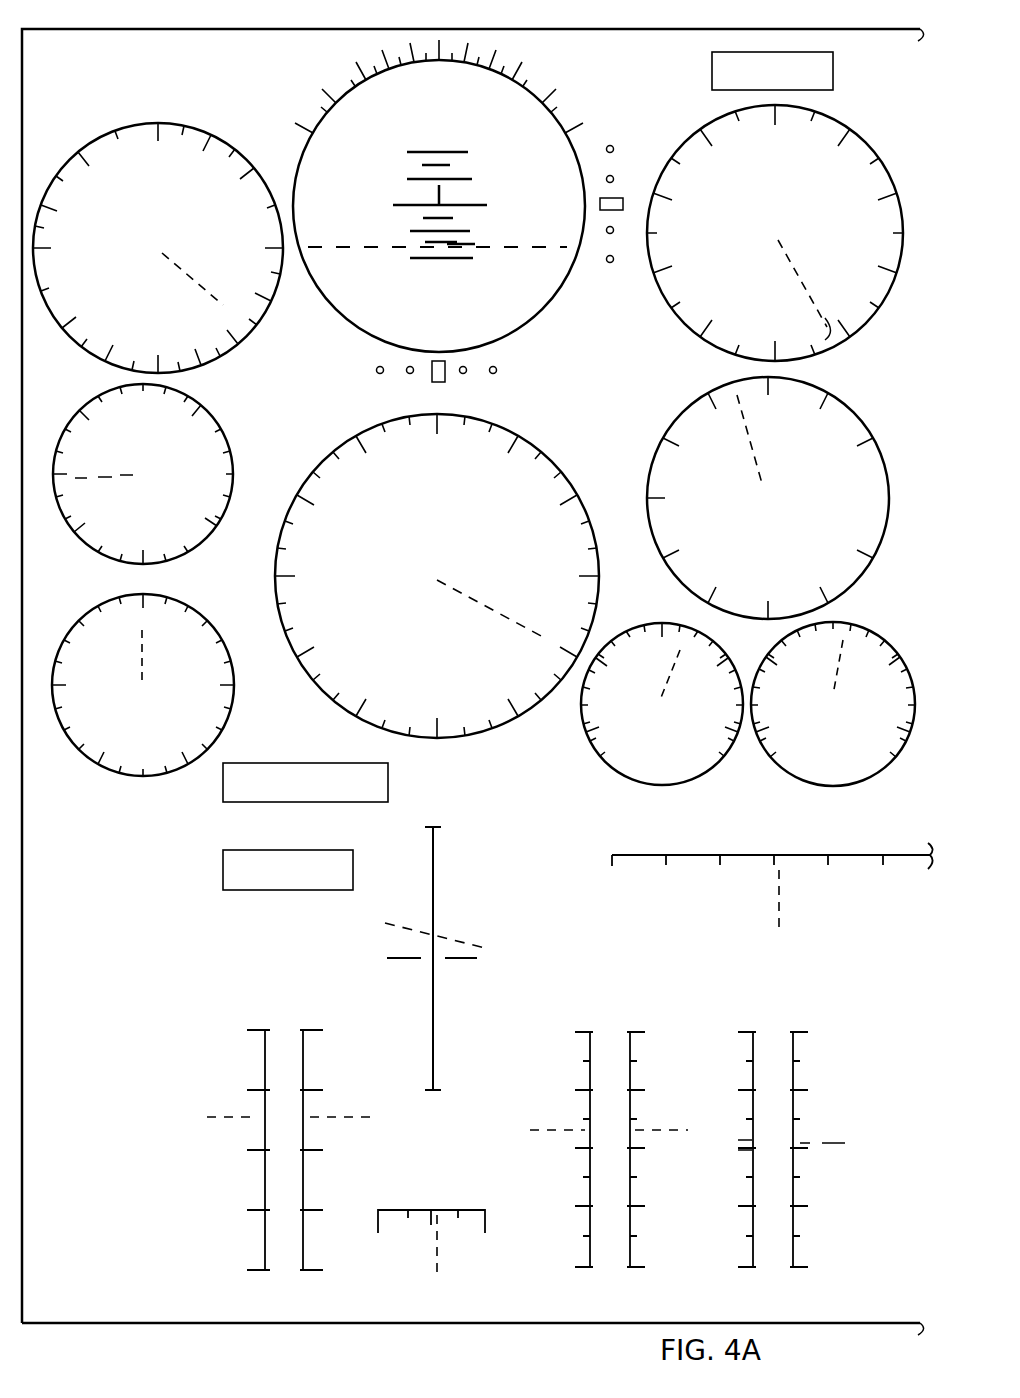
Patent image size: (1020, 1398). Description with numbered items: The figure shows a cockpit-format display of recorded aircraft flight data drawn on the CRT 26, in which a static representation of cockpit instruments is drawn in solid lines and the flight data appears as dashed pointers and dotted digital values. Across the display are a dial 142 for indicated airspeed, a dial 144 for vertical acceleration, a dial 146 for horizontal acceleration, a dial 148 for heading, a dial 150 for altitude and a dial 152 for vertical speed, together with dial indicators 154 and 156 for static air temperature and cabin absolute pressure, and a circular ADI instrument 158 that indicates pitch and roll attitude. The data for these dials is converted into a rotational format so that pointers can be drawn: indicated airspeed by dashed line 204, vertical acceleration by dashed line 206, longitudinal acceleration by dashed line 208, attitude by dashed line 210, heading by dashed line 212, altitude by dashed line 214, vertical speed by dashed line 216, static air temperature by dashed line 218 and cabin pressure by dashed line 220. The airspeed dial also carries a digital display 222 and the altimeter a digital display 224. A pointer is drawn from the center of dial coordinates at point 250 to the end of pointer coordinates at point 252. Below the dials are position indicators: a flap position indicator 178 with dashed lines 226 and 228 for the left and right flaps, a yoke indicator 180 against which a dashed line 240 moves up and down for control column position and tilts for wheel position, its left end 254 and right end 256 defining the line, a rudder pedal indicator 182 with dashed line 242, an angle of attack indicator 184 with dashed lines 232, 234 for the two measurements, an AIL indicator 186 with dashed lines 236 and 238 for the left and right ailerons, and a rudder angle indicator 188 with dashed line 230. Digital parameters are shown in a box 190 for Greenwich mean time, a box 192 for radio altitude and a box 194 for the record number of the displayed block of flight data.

The CRT 26 is at (165, 29).
The dial for indicated airspeed (IAS) 142 is at (158, 230).
The dial for vertical acceleration (VER) 144 is at (168, 471).
The dial for horizontal acceleration (LNG) 146 is at (143, 670).
The dial for heading (HDG) 148 is at (437, 561).
The dial for altitude (ALT) 150 is at (780, 237).
The dial for vertical speed (VSI) 152 is at (765, 490).
The dial indicator for static air temperature (SAT) 154 is at (662, 680).
The dial indicator for cabin absolute pressure (CAB) 156 is at (834, 682).
The circular ADI instrument 158 is at (465, 211).
The flap position indicator 178 is at (278, 1131).
The control column and wheel (yoke) indicator 180 is at (411, 946).
The rudder pedal indicator 182 is at (452, 1215).
The angle of attack indicator 184 is at (599, 1129).
The AIL indicator 186 is at (768, 1128).
The rudder angle indicator 188 is at (765, 864).
The box for Greenwich mean time 190 is at (388, 780).
The box for radio altitude 192 is at (833, 63).
The box for record number 194 is at (355, 860).
The dashed line pointer for indicated airspeed 204 is at (158, 277).
The dashed line for vertical acceleration indicator 206 is at (80, 480).
The dashed line for longitudinal acceleration 208 is at (143, 633).
The dashed line for aircraft attitude 210 is at (343, 247).
The dashed line for aircraft heading 212 is at (490, 608).
The dashed line for altitude 214 is at (803, 287).
The dashed line for vertical speed indicator 216 is at (758, 473).
The dashed line for static air temperature 218 is at (670, 680).
The dashed line for cabin pressure 220 is at (837, 672).
The digital display of airspeed dial 222 is at (163, 207).
The digital display of altimeter 224 is at (743, 185).
The dashed line for left flap position 226 is at (232, 1115).
The dashed line for right flap position 228 is at (336, 1117).
The dashed line for rudder position 230 is at (779, 902).
The dashed line for first angle of attack measurement 232 is at (560, 1128).
The dashed line for second angle of attack measurement 234 is at (660, 1130).
The dashed line for left aileron position 236 is at (729, 1138).
The dashed line for right aileron position 238 is at (822, 1135).
The dashed line for control column and wheel position 240 is at (445, 938).
The dashed line for rudder pedal position 242 is at (437, 1278).
The center of dial point 250 is at (773, 238).
The end of pointer point 252 is at (822, 322).
The left end of indicator line 254 is at (372, 918).
The right end of indicator line 256 is at (517, 955).